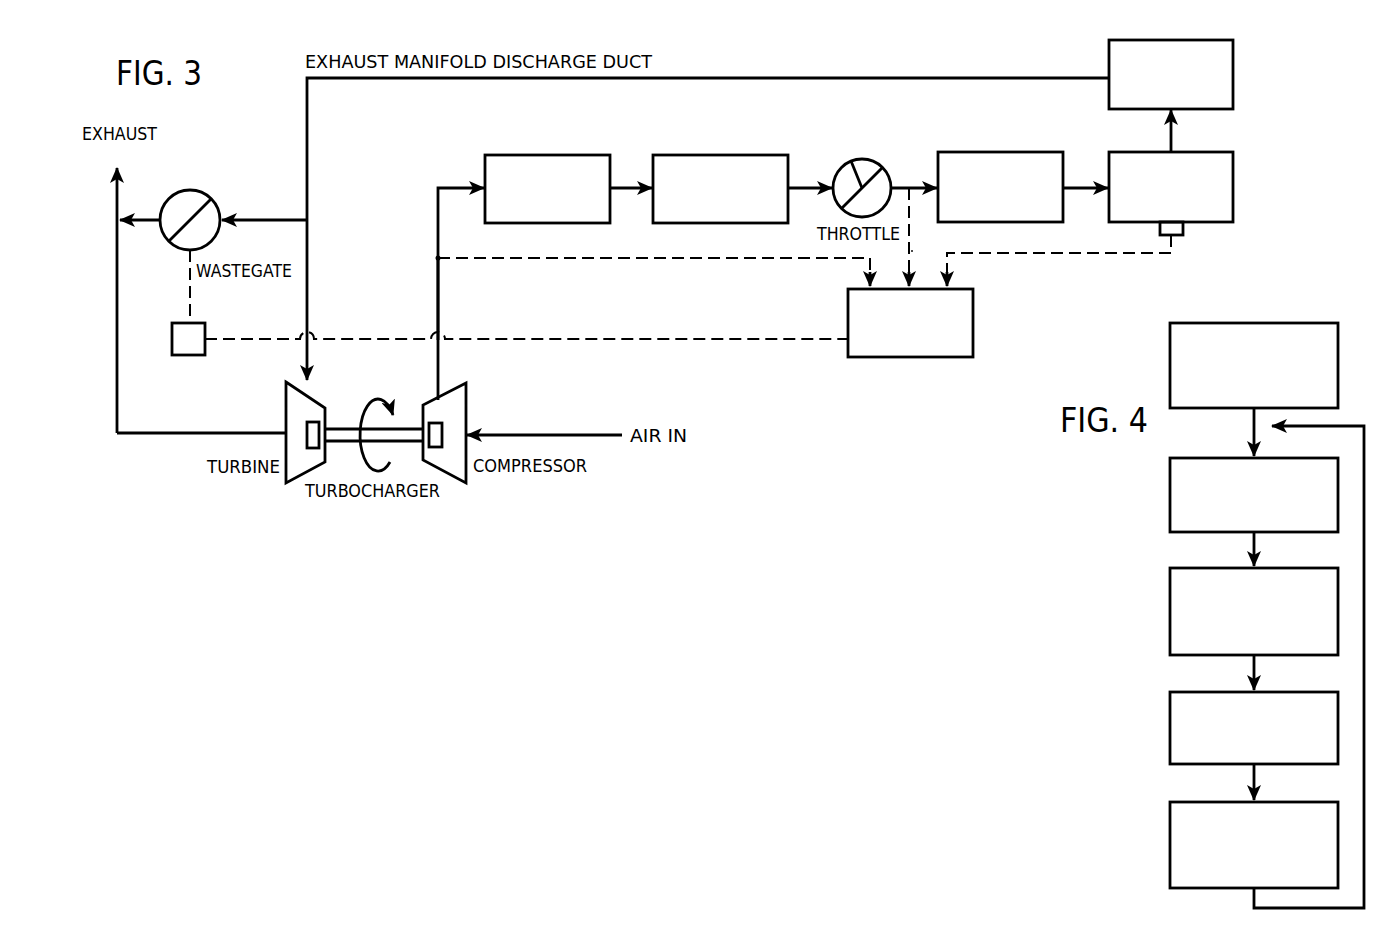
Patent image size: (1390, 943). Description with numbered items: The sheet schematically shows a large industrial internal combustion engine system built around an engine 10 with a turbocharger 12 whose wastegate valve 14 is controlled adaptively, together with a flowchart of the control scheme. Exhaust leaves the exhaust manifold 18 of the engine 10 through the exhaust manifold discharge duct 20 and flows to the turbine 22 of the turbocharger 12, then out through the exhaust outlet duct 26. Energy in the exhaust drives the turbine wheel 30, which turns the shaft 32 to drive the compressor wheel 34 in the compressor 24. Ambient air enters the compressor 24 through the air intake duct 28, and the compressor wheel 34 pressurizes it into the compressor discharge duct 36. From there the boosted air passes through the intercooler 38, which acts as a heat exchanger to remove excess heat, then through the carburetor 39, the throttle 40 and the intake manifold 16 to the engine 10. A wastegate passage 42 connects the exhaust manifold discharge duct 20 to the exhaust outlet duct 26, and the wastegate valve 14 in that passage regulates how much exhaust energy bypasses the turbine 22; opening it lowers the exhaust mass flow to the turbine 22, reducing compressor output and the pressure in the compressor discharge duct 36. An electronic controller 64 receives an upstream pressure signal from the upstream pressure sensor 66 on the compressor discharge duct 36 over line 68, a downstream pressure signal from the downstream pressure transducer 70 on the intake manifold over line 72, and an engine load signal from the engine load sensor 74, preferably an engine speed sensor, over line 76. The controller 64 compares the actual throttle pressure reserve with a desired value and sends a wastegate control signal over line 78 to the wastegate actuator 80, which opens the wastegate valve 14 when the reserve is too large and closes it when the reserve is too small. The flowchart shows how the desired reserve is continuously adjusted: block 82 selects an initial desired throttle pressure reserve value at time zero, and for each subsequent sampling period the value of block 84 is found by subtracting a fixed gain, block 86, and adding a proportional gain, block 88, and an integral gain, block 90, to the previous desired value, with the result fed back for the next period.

In FIG. 3, the engine 10 is at (1115, 152).
In FIG. 3, the turbocharger 12 is at (378, 466).
In FIG. 3, the wastegate valve 14 is at (173, 200).
In FIG. 3, the intake manifold 16 is at (971, 152).
In FIG. 3, the exhaust manifold 18 is at (1109, 56).
In FIG. 3, the exhaust manifold discharge duct 20 is at (908, 76).
In FIG. 3, the turbine 22 is at (278, 445).
In FIG. 3, the compressor 24 is at (473, 436).
In FIG. 3, the exhaust outlet duct 26 is at (117, 203).
In FIG. 3, the air intake duct 28 is at (577, 437).
In FIG. 3, the turbine wheel 30 is at (299, 422).
In FIG. 3, the shaft 32 is at (406, 426).
In FIG. 3, the compressor wheel 34 is at (454, 421).
In FIG. 3, the compressor discharge duct 36 is at (438, 247).
In FIG. 3, the intercooler 38 is at (507, 155).
In FIG. 3, the carburetor 39 is at (700, 155).
In FIG. 3, the throttle 40 is at (849, 172).
In FIG. 3, the wastegate passage 42 is at (270, 217).
In FIG. 3, the electronic controller 64 is at (910, 323).
In FIG. 3, the upstream pressure sensor 66 is at (436, 256).
In FIG. 3, the line 68 is at (746, 258).
In FIG. 3, the downstream pressure transducer 70 is at (909, 188).
In FIG. 3, the line 72 is at (913, 250).
In FIG. 3, the engine load sensor 74 is at (1184, 230).
In FIG. 3, the line 76 is at (1050, 253).
In FIG. 3, the line 78 is at (746, 340).
In FIG. 3, the wastegate actuator 80 is at (172, 332).
In FIG. 4, the block 82 is at (1170, 359).
In FIG. 4, the block 84 is at (1170, 838).
In FIG. 4, the block 86 is at (1170, 496).
In FIG. 4, the block 88 is at (1170, 606).
In FIG. 4, the block 90 is at (1170, 728).